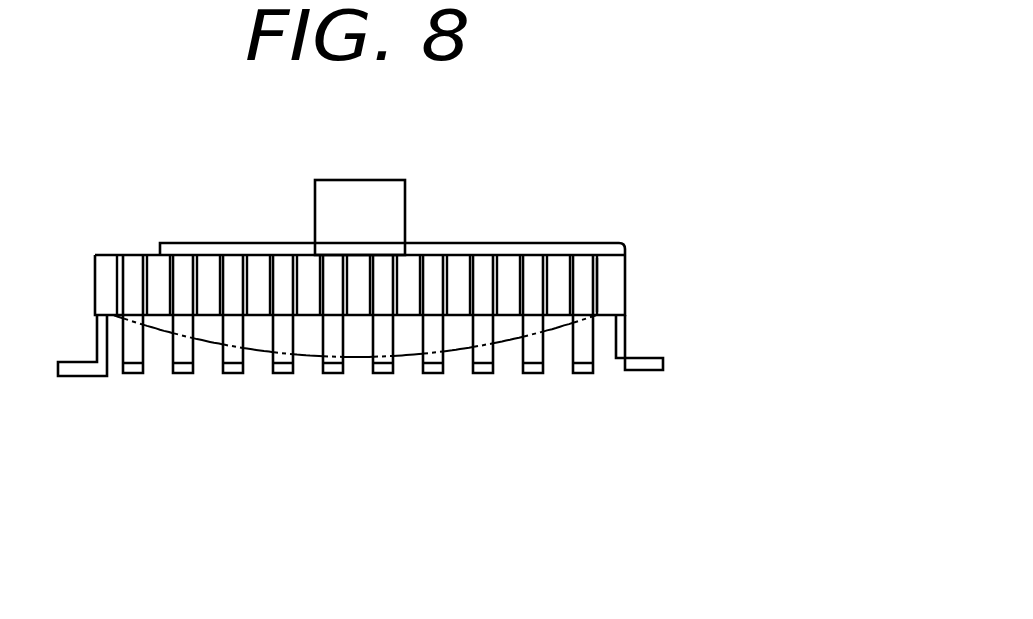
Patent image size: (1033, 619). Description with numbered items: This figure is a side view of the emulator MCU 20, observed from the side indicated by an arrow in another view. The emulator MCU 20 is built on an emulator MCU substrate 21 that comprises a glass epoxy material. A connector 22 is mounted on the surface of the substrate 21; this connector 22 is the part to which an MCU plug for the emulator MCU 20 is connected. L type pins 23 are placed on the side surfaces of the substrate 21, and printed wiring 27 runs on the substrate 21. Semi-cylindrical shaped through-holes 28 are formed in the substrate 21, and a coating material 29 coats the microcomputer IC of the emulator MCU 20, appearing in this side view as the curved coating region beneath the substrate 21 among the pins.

The emulator MCU 20 is at (526, 147).
The emulator MCU substrate 21 is at (627, 278).
The connector 22 is at (355, 180).
The L type pins 23 is at (627, 332).
The printed wiring 27 is at (213, 243).
The semi-cylindrical shaped through-holes 28 is at (597, 260).
The coating material 29 is at (308, 357).